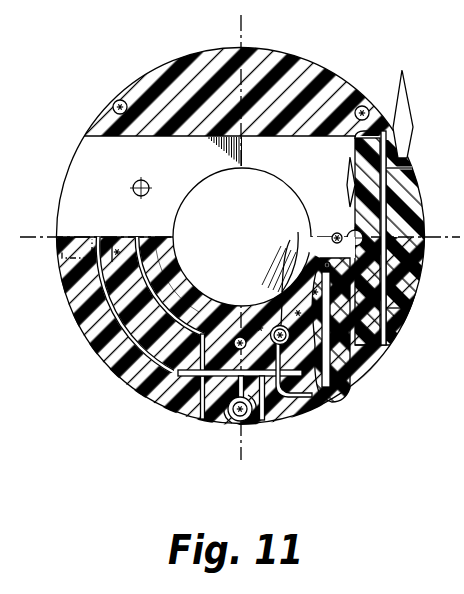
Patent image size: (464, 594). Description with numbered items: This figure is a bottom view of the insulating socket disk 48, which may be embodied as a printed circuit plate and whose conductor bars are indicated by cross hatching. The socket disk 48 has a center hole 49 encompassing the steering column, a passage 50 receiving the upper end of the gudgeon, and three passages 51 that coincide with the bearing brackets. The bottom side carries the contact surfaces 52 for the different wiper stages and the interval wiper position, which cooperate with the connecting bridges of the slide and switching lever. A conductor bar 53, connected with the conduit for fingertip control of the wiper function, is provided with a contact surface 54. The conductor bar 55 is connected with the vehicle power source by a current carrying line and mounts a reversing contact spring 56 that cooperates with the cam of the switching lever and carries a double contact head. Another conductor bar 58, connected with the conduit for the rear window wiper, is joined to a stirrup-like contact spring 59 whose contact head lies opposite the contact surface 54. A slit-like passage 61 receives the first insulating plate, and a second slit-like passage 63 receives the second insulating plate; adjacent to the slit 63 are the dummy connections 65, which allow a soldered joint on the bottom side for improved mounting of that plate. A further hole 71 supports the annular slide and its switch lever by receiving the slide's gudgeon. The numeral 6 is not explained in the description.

The centerline (cut-off numeral) 6 is at (56, 237).
The insulating socket disk 48 is at (185, 170).
The center hole 49 is at (232, 210).
The passage 50 is at (133, 184).
The passages 51 is at (118, 100).
The contact surfaces 52 is at (312, 236).
The conductor bar 53 is at (122, 268).
The contact surface 54 is at (107, 262).
The conductor bar 55 is at (174, 270).
The reversing contact spring 56 is at (143, 254).
The conductor bar 58 is at (76, 277).
The stirrup-like contact spring 59 is at (75, 250).
The slit-like passage 61 is at (263, 424).
The slit-like passage 63 is at (404, 72).
The dummy connections 65 is at (356, 166).
The hole 71 is at (352, 230).